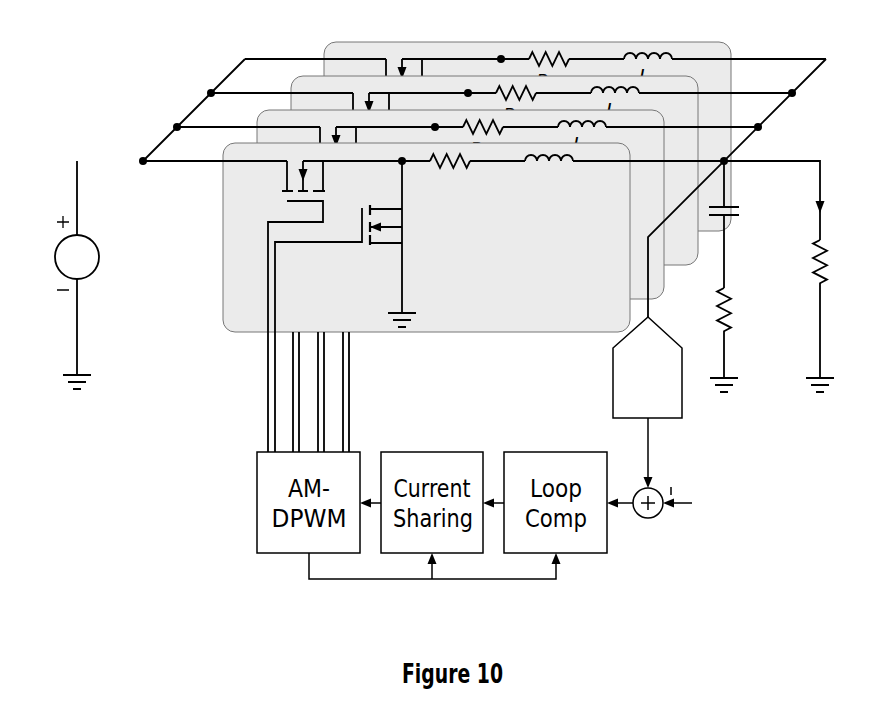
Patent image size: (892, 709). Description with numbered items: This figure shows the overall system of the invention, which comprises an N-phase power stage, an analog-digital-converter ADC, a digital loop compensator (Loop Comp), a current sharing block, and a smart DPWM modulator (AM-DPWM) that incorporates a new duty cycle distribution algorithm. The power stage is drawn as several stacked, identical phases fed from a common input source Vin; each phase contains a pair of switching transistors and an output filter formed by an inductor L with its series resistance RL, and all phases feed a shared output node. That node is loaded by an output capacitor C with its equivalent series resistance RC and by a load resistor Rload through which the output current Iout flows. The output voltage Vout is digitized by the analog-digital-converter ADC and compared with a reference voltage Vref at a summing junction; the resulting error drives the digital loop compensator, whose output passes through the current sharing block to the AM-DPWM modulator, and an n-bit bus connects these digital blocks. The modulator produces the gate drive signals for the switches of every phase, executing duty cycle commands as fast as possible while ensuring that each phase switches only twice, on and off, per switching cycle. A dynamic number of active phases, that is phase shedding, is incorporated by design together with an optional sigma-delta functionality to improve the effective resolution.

The input voltage source Vin is at (133, 224).
The inductor series resistance RL is at (450, 175).
The inductor L is at (549, 172).
The output capacitor C is at (712, 224).
The capacitor ESR RC is at (710, 340).
The output current Iout is at (789, 200).
The load resistor Rload is at (795, 316).
The analog-digital-converter ADC is at (647, 367).
The output voltage Vout is at (666, 453).
The reference voltage Vref is at (697, 503).
The n-bit bus n is at (435, 574).